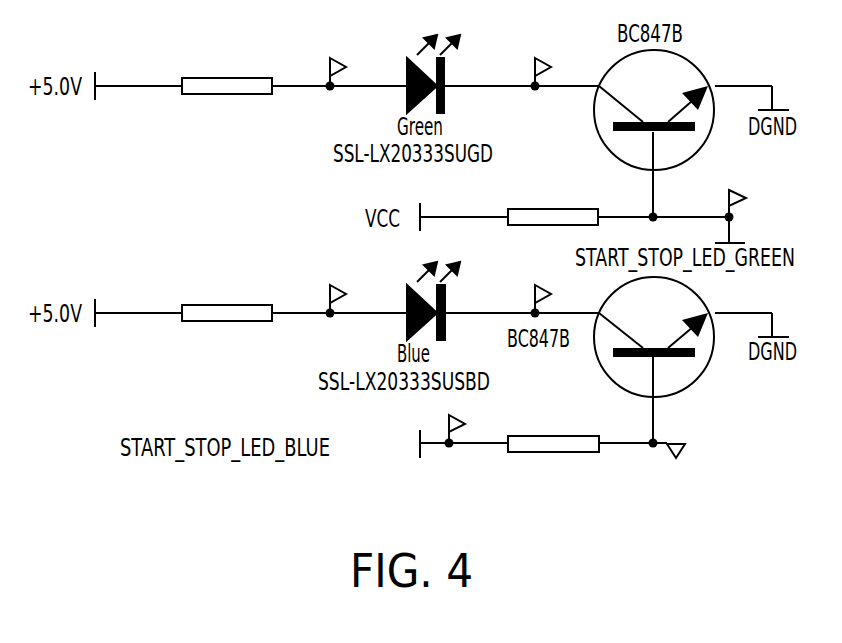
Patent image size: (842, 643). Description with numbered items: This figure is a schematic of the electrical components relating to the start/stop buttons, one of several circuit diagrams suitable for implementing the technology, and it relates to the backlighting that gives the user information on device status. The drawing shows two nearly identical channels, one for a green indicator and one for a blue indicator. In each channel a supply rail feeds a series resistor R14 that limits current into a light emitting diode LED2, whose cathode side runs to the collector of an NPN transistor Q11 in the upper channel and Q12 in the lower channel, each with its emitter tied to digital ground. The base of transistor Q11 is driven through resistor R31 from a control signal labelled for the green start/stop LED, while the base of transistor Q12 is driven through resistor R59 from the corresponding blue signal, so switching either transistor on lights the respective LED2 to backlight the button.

The 470 ohm resistor R14 is at (227, 199).
The light emitting diode (LED 2) LED2 is at (426, 174).
The BC847B transistor Q11 is at (654, 133).
The BC847B transistor Q12 is at (654, 360).
The 47k resistor R31 is at (553, 218).
The 47k resistor R59 is at (553, 447).